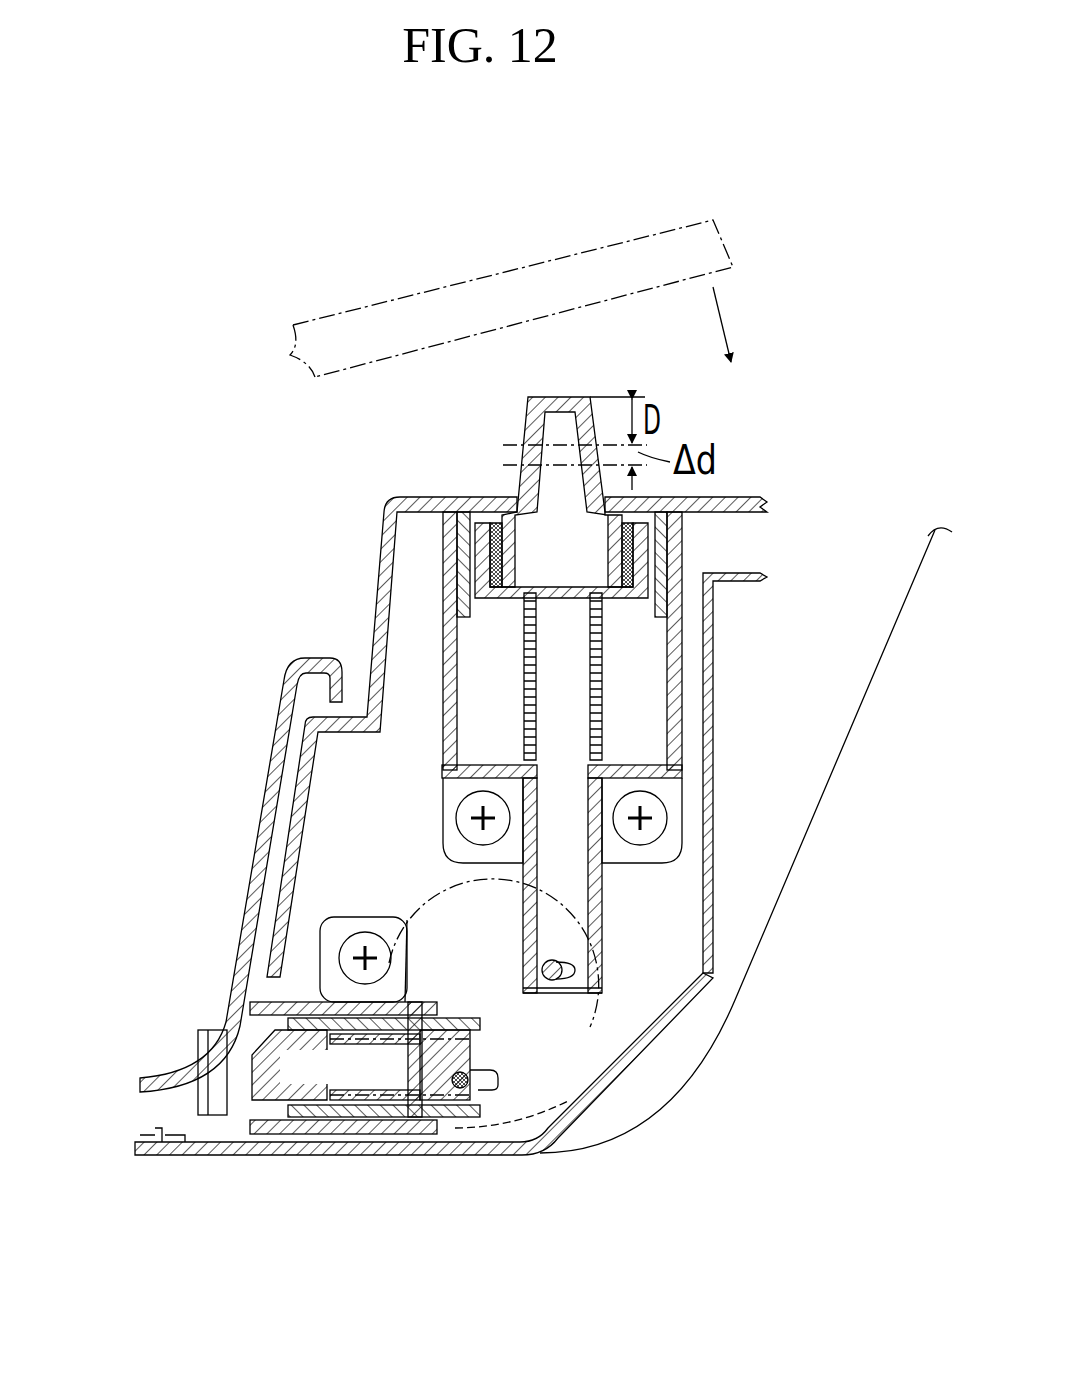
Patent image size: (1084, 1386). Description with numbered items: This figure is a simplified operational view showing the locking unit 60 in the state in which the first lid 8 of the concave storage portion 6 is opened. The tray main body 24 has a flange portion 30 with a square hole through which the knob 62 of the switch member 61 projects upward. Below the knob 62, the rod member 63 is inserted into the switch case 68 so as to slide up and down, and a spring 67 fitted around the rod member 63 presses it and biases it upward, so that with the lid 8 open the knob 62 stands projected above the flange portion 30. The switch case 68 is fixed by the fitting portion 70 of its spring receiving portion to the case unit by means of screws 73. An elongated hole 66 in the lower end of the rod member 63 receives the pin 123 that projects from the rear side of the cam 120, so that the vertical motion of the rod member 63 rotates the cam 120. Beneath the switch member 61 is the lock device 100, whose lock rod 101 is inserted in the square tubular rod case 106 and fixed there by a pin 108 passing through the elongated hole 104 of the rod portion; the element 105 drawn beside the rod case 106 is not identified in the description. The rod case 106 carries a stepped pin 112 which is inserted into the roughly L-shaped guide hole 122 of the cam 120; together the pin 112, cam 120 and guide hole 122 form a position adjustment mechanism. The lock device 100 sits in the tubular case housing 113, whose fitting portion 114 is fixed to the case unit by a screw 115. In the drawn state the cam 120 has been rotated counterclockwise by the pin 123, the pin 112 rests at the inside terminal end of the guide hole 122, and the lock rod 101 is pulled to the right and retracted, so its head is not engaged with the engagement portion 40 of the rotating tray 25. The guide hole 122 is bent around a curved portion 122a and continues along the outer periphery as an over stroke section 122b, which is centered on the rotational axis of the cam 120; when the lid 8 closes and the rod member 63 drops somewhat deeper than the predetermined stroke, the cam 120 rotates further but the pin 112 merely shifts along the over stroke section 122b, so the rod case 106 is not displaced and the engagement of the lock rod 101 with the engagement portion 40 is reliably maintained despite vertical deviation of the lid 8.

The first lid 8 is at (593, 307).
The knob 62 is at (533, 400).
The flange portion 30 is at (757, 497).
The locking unit 60 is at (320, 526).
The switch member 61 is at (438, 593).
The switch case 68 is at (683, 680).
The spring 67 is at (525, 667).
The rod member 63 is at (570, 700).
The elongated hole 66 is at (568, 972).
The fitting portion 70 is at (457, 790).
The screws 73 is at (464, 822).
The tray main body 24 is at (713, 637).
The cam 120 is at (653, 1028).
The concave storage portion 6 is at (908, 590).
The rotating tray 25 is at (262, 808).
The fitting portion 114 is at (328, 952).
The screw 115 is at (363, 942).
The case housing 113 is at (406, 975).
The lock device 100 is at (244, 1031).
The lock rod 101 is at (335, 1086).
The elongated hole 104 is at (430, 1002).
The pin 108 is at (425, 1028).
The pin 112 is at (448, 1110).
The plate 105 is at (327, 1123).
The rod case 106 is at (360, 1135).
The guide hole 122 is at (490, 1090).
The curved portion 122a is at (462, 1125).
The over stroke section 122b is at (565, 1108).
The pin 123 is at (556, 985).
The engagement portion 40 is at (212, 1102).